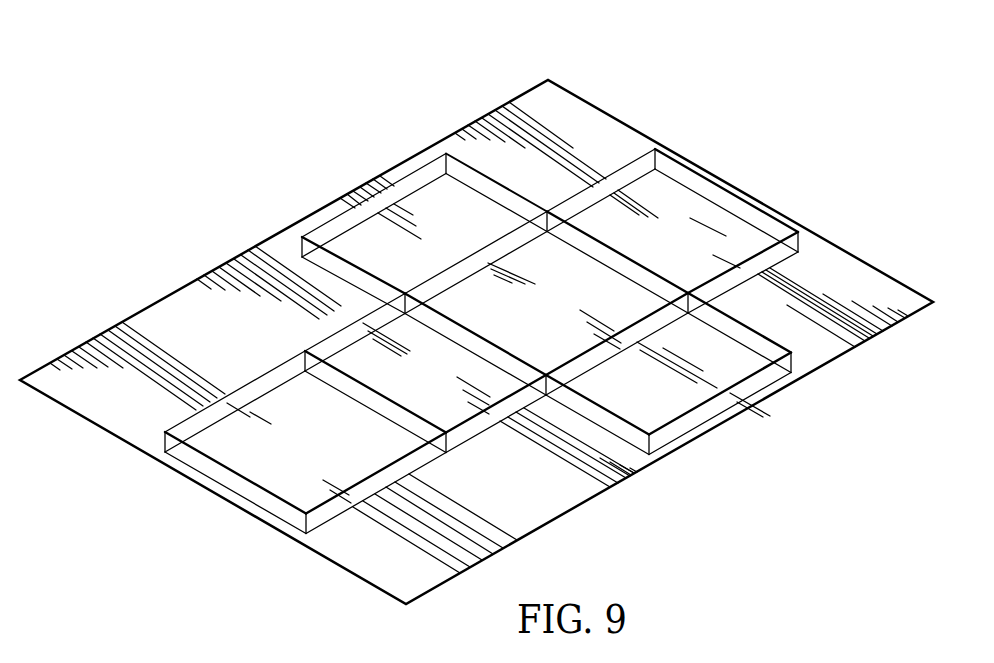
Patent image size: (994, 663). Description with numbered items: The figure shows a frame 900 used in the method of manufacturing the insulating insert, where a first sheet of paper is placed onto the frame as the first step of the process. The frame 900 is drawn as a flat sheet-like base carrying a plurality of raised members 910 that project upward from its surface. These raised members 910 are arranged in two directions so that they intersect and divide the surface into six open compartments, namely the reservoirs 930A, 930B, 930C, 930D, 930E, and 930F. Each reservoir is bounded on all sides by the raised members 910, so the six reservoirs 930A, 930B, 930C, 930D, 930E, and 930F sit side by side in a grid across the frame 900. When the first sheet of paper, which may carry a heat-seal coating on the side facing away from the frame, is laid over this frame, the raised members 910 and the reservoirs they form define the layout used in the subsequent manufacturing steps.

The frame 900 is at (307, 73).
The raised members 910 is at (313, 248).
The reservoir 930A is at (683, 197).
The reservoir 930B is at (433, 192).
The reservoir 930C is at (453, 382).
The reservoir 930D is at (255, 470).
The reservoir 930E is at (658, 413).
The reservoir 930F is at (578, 316).